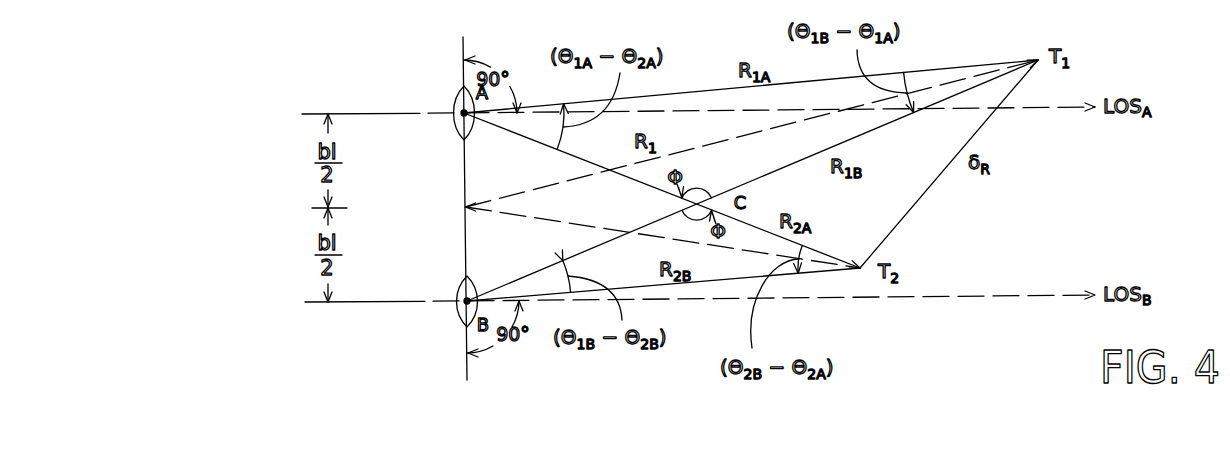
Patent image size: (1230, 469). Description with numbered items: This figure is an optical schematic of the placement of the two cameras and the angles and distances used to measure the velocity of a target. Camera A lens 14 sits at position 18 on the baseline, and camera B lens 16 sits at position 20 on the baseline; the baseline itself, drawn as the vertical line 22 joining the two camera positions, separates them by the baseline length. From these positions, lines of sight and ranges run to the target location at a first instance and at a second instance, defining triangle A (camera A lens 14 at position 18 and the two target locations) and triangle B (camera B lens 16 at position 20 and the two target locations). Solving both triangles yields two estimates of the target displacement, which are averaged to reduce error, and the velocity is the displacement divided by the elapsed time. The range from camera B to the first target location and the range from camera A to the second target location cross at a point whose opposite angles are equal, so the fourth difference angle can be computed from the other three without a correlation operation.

The camera A lens 14 is at (459, 96).
The camera B lens 16 is at (460, 318).
The position of camera A lens on the baseline 18 is at (459, 127).
The position of camera B lens on the baseline 20 is at (461, 289).
The baseline 22 is at (469, 213).